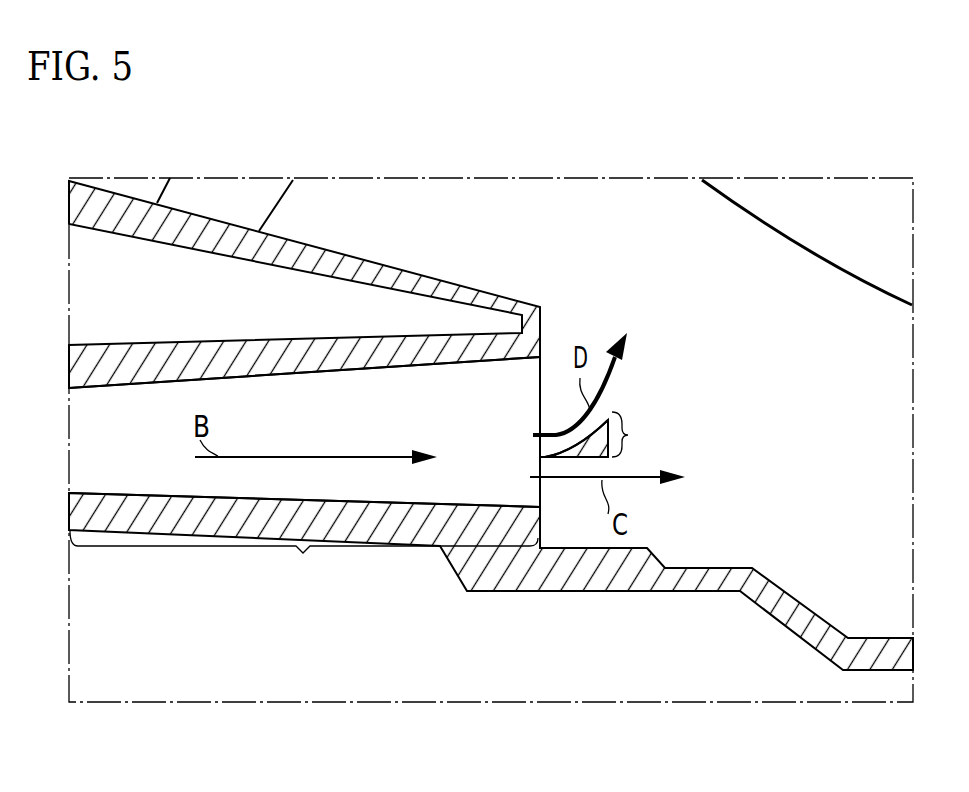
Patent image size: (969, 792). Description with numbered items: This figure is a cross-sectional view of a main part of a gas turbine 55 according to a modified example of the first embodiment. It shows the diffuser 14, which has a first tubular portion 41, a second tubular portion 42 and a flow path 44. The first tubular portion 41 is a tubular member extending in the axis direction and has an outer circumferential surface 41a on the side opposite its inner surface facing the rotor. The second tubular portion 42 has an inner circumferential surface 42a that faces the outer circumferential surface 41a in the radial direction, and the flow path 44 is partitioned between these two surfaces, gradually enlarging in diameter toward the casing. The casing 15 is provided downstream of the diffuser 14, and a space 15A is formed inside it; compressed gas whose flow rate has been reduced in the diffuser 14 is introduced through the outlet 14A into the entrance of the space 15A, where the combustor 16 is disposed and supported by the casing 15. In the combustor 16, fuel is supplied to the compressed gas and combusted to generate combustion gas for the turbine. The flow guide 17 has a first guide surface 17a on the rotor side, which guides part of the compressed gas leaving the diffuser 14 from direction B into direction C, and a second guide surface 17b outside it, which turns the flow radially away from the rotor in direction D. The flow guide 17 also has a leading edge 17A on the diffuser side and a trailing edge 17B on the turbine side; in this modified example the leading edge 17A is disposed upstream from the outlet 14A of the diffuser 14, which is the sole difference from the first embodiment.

The gas turbine 55 is at (85, 139).
The diffuser 14 is at (304, 561).
The outlet of the diffuser 14A is at (540, 388).
The casing 15 is at (613, 152).
The space 15A is at (558, 385).
The combustor 16 is at (752, 230).
The flow guide 17 is at (620, 396).
The leading edge 17A is at (545, 456).
The trailing edge 17B is at (632, 435).
The first guide surface 17a is at (582, 462).
The second guide surface 17b is at (572, 446).
The first tubular portion 41 is at (115, 513).
The outer circumferential surface 41a is at (200, 496).
The second tubular portion 42 is at (97, 365).
The inner circumferential surface 42a is at (343, 372).
The flow path 44 is at (390, 410).